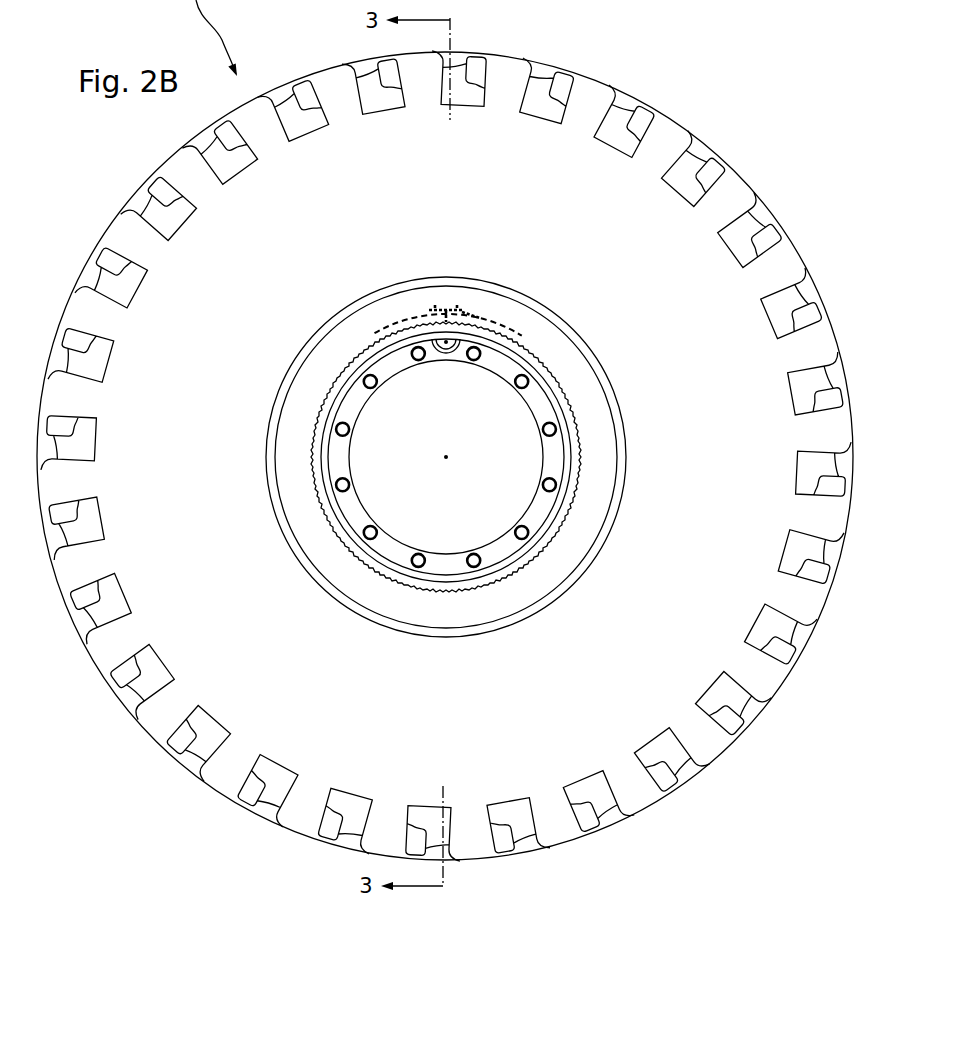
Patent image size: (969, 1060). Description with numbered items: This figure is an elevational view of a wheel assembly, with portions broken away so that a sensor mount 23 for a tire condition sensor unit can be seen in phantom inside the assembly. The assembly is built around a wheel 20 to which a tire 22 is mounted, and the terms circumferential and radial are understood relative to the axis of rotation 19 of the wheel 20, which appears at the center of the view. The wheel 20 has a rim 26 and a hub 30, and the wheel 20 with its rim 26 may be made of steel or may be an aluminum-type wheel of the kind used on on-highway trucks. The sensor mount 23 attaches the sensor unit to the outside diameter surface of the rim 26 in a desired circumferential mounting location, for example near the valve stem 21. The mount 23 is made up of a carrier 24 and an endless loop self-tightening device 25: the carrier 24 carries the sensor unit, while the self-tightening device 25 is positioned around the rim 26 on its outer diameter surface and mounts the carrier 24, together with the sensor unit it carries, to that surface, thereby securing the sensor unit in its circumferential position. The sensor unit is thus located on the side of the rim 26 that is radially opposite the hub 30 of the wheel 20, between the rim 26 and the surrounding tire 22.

The axis of rotation 19 is at (446, 459).
The wheel 20 is at (620, 363).
The valve stem 21 is at (446, 340).
The tire 22 is at (735, 190).
The sensor mount 23 is at (412, 300).
The carrier 24 is at (480, 312).
The endless loop self-tightening device 25 is at (497, 322).
The rim 26 is at (550, 384).
The hub 30 is at (547, 509).